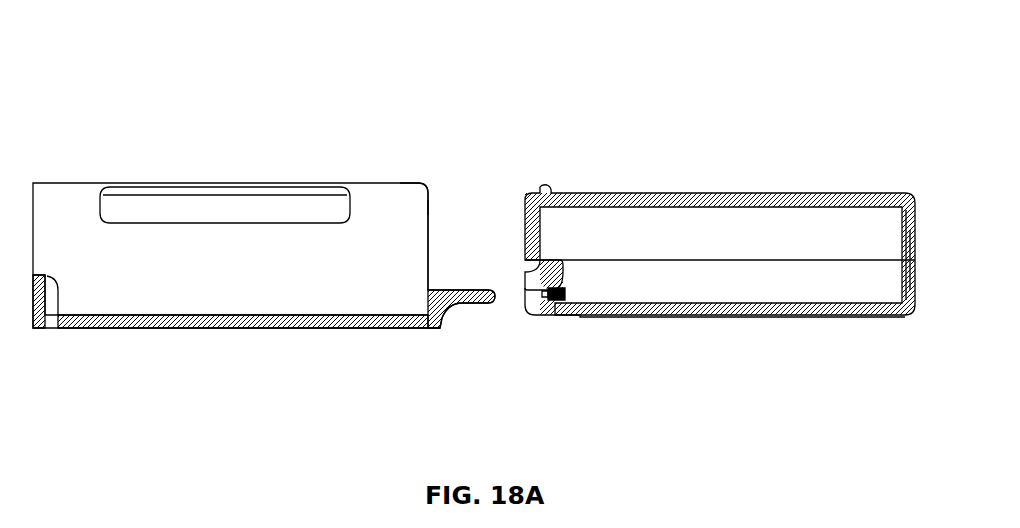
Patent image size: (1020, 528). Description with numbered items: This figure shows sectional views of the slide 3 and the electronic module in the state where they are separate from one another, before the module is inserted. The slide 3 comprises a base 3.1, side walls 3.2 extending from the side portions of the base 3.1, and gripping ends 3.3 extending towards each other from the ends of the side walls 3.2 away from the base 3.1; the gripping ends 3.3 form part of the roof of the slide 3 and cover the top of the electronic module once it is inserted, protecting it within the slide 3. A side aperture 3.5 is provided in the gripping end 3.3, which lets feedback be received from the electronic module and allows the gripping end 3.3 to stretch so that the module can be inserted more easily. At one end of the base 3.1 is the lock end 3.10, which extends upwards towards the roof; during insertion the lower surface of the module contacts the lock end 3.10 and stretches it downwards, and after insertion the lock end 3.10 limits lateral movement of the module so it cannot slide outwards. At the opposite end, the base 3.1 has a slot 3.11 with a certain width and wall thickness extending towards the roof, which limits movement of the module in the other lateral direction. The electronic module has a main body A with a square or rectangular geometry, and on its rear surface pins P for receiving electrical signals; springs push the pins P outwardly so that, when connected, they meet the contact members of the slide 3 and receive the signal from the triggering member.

The slide 3 is at (100, 103).
The base 3.1 is at (293, 326).
The side wall 3.2 is at (428, 238).
The gripping end 3.3 is at (428, 198).
The side aperture 3.5 is at (253, 212).
The lock end 3.10 is at (483, 303).
The slot 3.11 is at (62, 328).
The main body A is at (655, 193).
The pin P is at (545, 292).